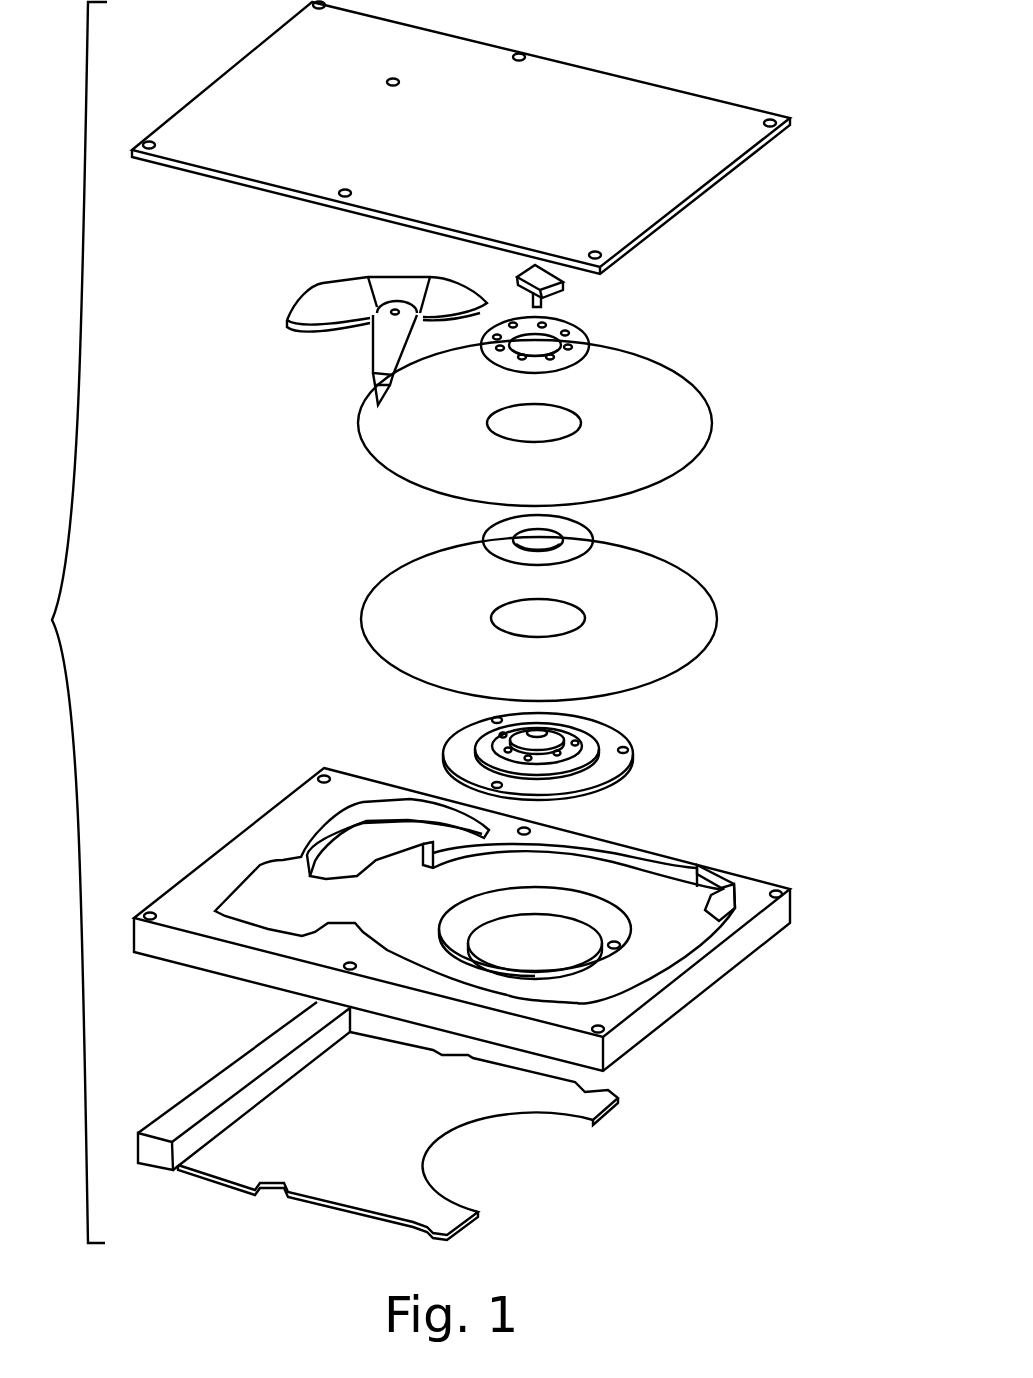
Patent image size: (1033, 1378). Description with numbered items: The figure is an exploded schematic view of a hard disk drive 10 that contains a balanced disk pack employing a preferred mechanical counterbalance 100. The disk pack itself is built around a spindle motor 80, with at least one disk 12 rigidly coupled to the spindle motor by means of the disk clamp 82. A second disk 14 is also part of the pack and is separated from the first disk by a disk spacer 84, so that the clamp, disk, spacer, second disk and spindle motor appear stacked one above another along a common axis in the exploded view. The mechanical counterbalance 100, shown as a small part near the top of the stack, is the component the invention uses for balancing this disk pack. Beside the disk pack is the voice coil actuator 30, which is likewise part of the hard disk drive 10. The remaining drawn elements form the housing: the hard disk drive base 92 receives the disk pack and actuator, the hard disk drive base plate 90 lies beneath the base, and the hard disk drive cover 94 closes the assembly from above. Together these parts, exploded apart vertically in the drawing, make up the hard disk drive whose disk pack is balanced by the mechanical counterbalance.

The hard disk drive 10 is at (59, 622).
The disk 12 is at (707, 415).
The second disk 14 is at (712, 610).
The voice coil actuator 30 is at (282, 275).
The spindle motor 80 is at (613, 730).
The disk clamp 82 is at (582, 338).
The disk spacer 84 is at (585, 535).
The hard disk drive base plate 90 is at (617, 1107).
The hard disk drive base 92 is at (734, 952).
The hard disk drive cover 94 is at (710, 107).
The mechanical counterbalance 100 is at (563, 290).